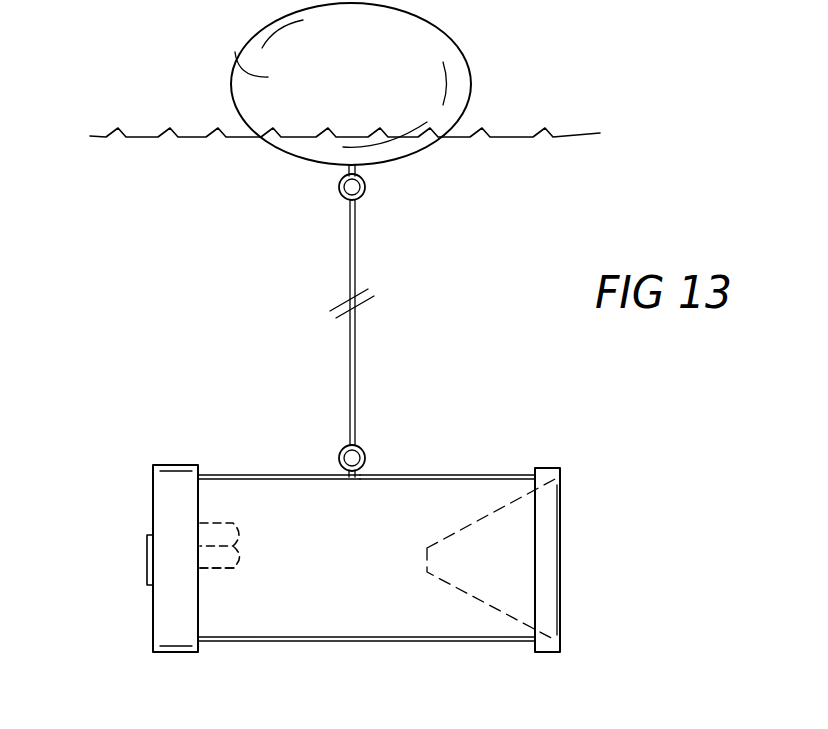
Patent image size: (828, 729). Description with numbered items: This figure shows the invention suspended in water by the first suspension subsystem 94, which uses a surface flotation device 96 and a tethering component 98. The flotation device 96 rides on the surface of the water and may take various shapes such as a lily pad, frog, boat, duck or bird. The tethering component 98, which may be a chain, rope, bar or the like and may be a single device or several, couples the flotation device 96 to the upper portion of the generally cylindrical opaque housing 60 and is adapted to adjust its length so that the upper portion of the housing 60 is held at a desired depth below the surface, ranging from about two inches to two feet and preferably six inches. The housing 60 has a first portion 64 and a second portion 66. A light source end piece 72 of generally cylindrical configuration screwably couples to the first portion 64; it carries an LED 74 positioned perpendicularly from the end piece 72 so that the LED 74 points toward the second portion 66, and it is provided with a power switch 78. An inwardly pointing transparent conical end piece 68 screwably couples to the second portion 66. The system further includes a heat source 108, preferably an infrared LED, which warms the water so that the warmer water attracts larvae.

The housing 60 is at (393, 476).
The first portion 64 is at (216, 477).
The second portion 66 is at (526, 475).
The transparent conical end piece 68 is at (548, 590).
The light source end piece 72 is at (163, 603).
The LED 74 is at (217, 570).
The power switch 78 is at (146, 548).
The first suspension subsystem 94 is at (472, 87).
The surface flotation device 96 is at (235, 52).
The tethering component 98 is at (355, 262).
The heat source 108 is at (236, 523).